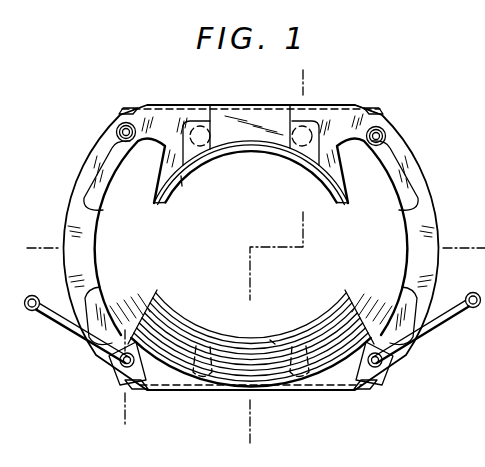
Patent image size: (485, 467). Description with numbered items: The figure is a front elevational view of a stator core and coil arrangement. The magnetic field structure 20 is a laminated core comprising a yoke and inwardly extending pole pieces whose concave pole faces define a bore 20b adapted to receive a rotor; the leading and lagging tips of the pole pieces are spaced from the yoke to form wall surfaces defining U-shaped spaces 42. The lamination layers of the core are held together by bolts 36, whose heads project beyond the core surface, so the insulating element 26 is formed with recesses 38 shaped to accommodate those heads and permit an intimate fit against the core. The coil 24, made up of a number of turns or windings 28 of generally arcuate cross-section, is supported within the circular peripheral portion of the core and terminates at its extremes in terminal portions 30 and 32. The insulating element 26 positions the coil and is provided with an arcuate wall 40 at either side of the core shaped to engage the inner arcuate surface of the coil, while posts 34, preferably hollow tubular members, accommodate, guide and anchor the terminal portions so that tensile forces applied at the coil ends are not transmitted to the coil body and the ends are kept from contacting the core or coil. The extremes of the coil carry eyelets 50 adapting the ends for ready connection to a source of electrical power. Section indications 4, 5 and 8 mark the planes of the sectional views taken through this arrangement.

The magnetic field structure 20 is at (433, 184).
The bore 20b is at (268, 233).
The coil 24 is at (325, 366).
The insulating element 26 is at (355, 128).
The turns or windings 28 is at (372, 345).
The terminal portion 30 is at (72, 340).
The terminal portion 32 is at (440, 335).
The post 34 is at (113, 134).
The bolt 36 is at (288, 152).
The recess 38 is at (186, 118).
The arcuate wall 40 is at (182, 176).
The U-shaped space 42 is at (148, 181).
The eyelet 50 is at (33, 295).
The section line 4- 4 is at (305, 78).
The section line 5- 5 is at (38, 247).
The section line 8- 8 is at (150, 338).